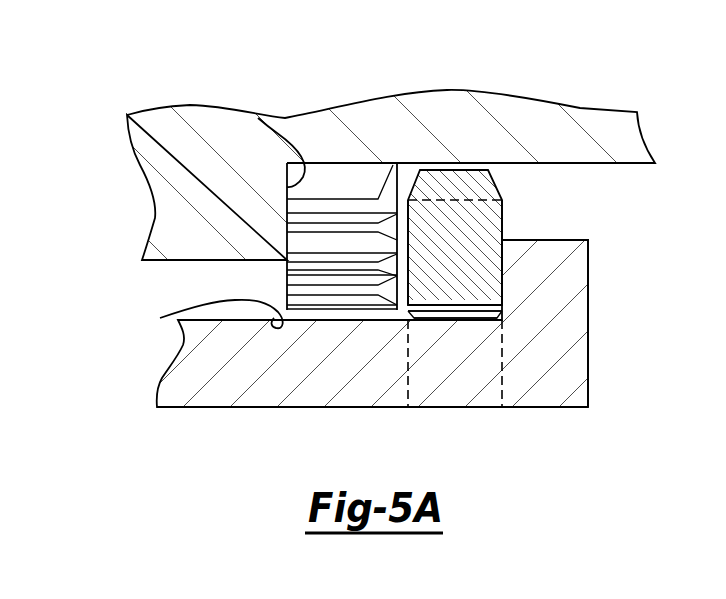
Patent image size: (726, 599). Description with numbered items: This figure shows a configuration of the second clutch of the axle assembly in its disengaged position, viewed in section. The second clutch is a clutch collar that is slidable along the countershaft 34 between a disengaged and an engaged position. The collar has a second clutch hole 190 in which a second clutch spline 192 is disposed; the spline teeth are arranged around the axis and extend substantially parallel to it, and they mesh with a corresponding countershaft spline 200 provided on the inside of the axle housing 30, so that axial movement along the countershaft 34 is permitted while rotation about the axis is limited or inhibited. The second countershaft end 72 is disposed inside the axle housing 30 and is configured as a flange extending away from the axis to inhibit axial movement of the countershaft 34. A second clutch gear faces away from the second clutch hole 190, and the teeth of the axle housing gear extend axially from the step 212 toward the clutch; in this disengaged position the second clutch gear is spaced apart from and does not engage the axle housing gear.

The axle housing 30 is at (172, 120).
The countershaft 34 is at (213, 393).
The second countershaft end 72 is at (588, 307).
The step 212 is at (258, 118).
The second clutch hole 190 is at (483, 300).
The second clutch spline 192 is at (443, 317).
The countershaft spline 200 is at (160, 318).